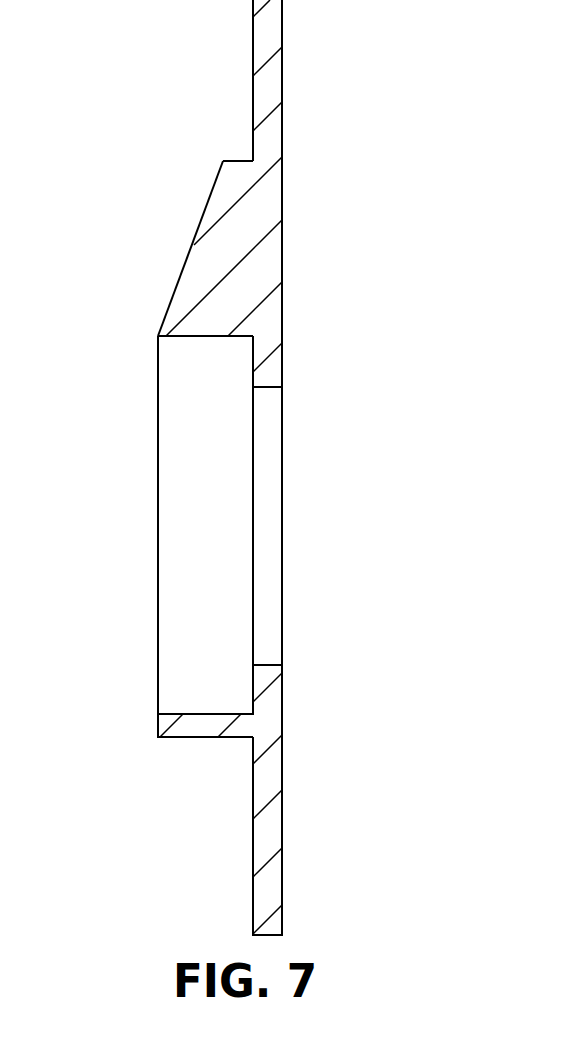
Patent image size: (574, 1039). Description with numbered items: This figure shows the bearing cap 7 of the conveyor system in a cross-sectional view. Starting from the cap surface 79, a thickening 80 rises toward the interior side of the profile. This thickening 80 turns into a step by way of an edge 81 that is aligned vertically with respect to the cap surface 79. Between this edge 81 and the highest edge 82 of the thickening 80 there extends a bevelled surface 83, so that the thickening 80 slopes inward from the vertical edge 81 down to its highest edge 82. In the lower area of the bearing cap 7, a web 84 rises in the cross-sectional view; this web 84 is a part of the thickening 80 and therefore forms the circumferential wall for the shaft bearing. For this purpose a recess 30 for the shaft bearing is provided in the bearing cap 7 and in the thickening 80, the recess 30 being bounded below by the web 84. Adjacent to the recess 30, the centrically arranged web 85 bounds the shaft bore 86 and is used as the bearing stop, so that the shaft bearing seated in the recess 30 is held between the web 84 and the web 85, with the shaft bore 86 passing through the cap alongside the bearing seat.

The bearing cap 7 is at (282, 230).
The cap surface 79 is at (268, 25).
The thickening 80 is at (202, 265).
The edge 81 is at (225, 160).
The highest edge 82 is at (158, 336).
The bevelled surface 83 is at (203, 208).
The web 84 is at (197, 730).
The centrically arranged web 85 is at (272, 695).
The shaft bore 86 is at (270, 467).
The recess 30 is at (182, 483).